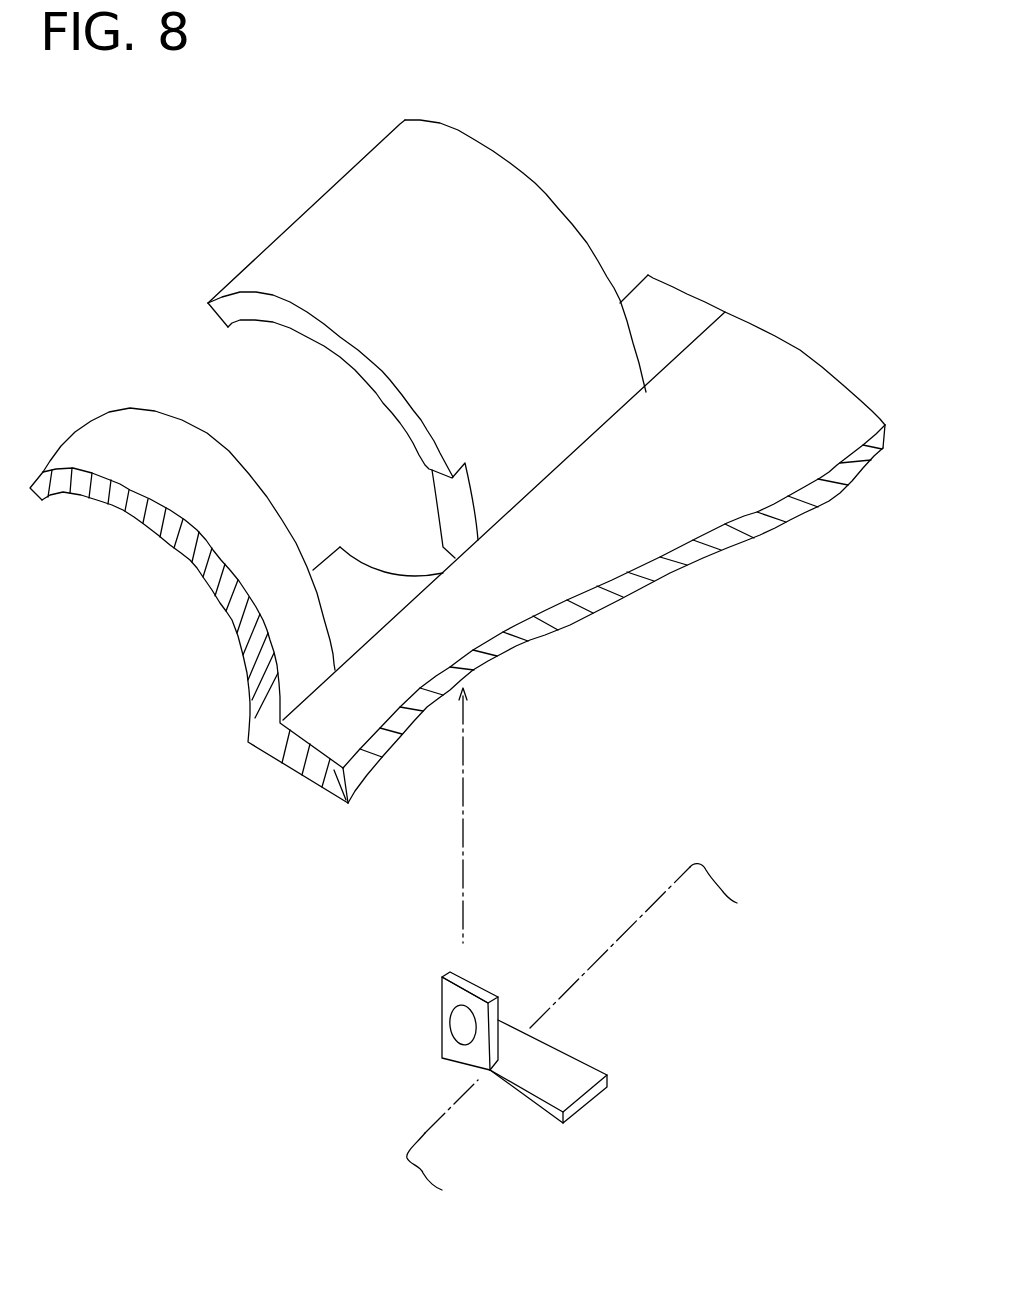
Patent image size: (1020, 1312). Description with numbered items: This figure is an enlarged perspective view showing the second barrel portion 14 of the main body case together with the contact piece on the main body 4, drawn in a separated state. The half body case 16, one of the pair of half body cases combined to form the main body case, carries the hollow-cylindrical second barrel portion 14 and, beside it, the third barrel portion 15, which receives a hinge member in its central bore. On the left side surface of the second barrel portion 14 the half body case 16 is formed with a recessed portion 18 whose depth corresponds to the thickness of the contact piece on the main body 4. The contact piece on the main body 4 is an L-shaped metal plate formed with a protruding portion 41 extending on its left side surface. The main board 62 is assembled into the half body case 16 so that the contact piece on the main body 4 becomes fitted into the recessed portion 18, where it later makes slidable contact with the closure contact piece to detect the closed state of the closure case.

The second barrel portion 14 is at (325, 210).
The third barrel portion 15 is at (90, 438).
The half body case 16 is at (783, 357).
The recessed portion 18 is at (463, 495).
The main board 62 is at (627, 928).
The contact piece on the main body 4 is at (500, 1047).
The protruding portion 41 is at (455, 1023).